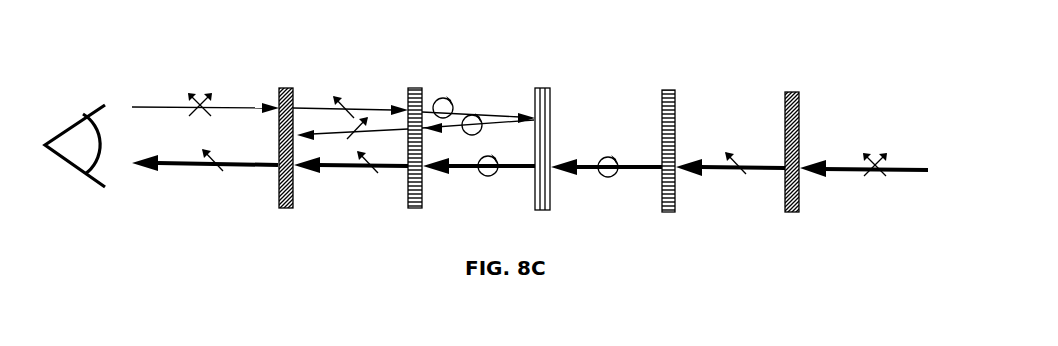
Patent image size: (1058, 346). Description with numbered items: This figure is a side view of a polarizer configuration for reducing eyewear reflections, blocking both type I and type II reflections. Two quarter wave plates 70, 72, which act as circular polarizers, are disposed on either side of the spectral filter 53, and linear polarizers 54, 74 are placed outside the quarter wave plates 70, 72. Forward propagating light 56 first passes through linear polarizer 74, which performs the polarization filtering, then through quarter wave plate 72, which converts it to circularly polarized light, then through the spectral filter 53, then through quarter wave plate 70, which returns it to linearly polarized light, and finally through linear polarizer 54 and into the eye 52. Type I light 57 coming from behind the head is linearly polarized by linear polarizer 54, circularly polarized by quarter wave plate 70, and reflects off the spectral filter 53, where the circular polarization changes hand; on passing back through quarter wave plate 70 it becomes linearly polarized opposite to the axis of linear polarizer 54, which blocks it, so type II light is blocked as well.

The eye 52 is at (88, 113).
The spectral filter 53 is at (545, 86).
The linear polarizer 54 is at (287, 84).
The forward propagating light 56 is at (838, 162).
The type I light 57 is at (163, 105).
The quarter wave plate 70 is at (415, 84).
The quarter wave plate 72 is at (668, 86).
The linear polarizer 74 is at (793, 90).